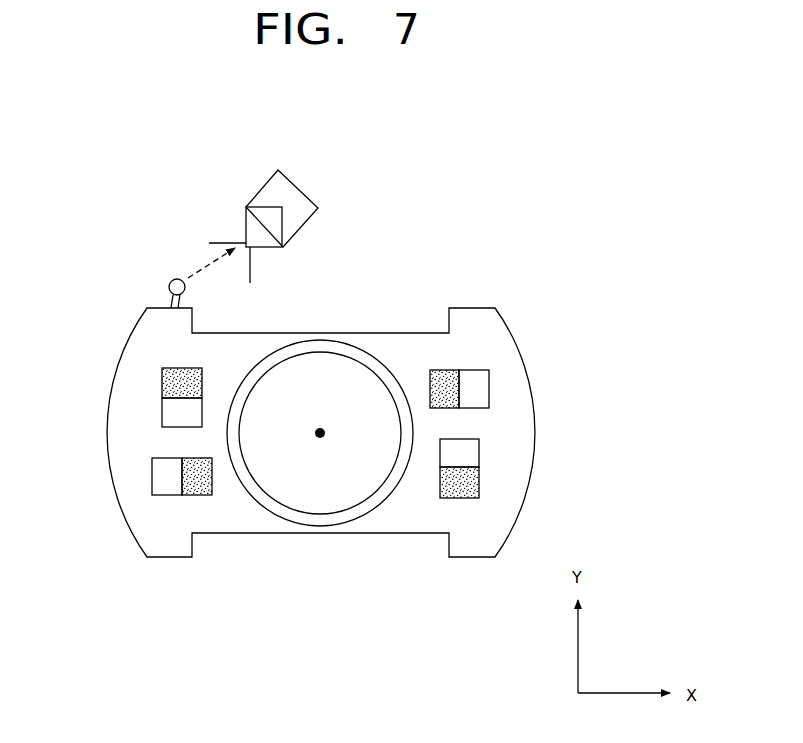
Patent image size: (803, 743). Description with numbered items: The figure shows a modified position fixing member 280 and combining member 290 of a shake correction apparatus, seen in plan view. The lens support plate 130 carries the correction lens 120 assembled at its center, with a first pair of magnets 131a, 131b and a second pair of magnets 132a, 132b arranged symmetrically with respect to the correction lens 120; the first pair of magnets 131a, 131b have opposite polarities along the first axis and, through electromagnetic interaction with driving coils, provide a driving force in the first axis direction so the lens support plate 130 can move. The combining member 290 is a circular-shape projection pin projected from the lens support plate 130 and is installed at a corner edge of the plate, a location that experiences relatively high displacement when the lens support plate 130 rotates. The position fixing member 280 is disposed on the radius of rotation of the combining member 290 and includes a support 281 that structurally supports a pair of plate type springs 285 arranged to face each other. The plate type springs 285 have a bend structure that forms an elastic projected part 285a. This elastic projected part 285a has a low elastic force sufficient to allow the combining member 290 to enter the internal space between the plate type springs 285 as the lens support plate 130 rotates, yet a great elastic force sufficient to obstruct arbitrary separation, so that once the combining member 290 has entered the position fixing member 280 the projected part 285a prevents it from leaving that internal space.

The lens support plate 130 is at (492, 332).
The correction lens 120 is at (282, 487).
The first pair of magnets 131a is at (162, 385).
The first pair of magnets 131b is at (489, 476).
The second pair of magnets 132a is at (478, 387).
The second pair of magnets 132b is at (165, 482).
The position fixing member 280 is at (253, 170).
The support 281 is at (298, 194).
The plate type springs 285 is at (217, 243).
The elastic projected part 285a is at (253, 250).
The combining member 290 is at (168, 300).